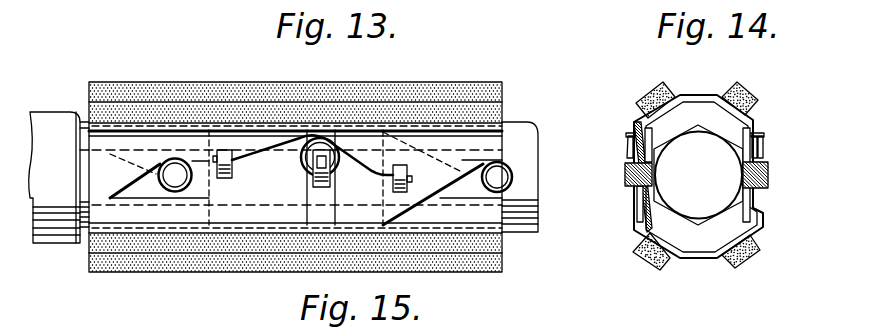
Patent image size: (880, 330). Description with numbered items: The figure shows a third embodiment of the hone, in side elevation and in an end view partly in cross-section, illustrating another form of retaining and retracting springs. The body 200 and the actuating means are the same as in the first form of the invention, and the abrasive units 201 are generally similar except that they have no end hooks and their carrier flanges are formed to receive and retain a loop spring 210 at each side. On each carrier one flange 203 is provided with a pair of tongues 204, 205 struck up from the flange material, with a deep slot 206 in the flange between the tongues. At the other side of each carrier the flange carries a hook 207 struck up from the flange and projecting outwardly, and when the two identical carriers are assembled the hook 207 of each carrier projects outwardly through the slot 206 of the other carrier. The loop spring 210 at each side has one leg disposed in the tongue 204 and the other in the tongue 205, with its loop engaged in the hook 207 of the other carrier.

In FIG. 13, the body 200 is at (527, 182).
In FIG. 14, the abrasive unit 201 is at (698, 92).
In FIG. 13, the flange 203 is at (492, 143).
In FIG. 13, the tongue 204 is at (403, 192).
In FIG. 13, the tongue 205 is at (225, 178).
In FIG. 13, the slot 206 is at (335, 208).
In FIG. 14, the slot 206 is at (640, 202).
In FIG. 13, the hook 207 is at (313, 184).
In FIG. 14, the hook 207 is at (627, 184).
In FIG. 13, the loop spring 210 is at (365, 160).
In FIG. 14, the loop spring 210 is at (627, 144).